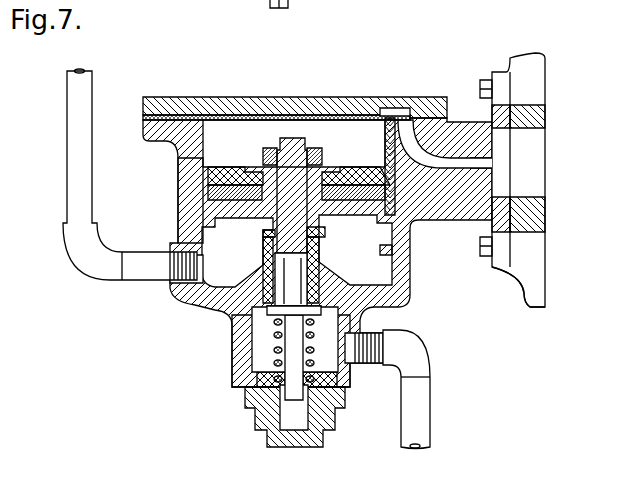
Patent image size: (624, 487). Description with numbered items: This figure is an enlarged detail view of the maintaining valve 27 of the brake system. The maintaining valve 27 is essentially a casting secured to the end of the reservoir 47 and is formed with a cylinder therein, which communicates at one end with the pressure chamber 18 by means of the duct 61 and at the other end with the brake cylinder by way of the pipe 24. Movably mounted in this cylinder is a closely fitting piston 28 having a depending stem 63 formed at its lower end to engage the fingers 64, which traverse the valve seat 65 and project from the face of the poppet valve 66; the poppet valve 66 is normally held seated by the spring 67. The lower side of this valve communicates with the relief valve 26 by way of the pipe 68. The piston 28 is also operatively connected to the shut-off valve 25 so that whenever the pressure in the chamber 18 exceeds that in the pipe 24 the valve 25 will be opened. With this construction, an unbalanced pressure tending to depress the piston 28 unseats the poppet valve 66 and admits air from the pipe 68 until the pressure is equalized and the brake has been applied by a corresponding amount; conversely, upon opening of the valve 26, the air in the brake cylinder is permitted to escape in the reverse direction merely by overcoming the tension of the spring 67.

The pressure chamber 18 is at (527, 180).
The pipe 24 is at (70, 149).
The shut-off valve 25 is at (243, 337).
The three-way valve 26 is at (197, 170).
The maintaining valve 27 is at (200, 143).
The piston 28 is at (357, 167).
The reservoir 47 is at (533, 287).
The duct 61 is at (502, 163).
The depending stem 63 is at (311, 226).
The fingers 64 is at (313, 262).
The valve seat 65 is at (292, 277).
The poppet valve 66 is at (273, 313).
The spring 67 is at (312, 334).
The pipe 68 is at (423, 400).